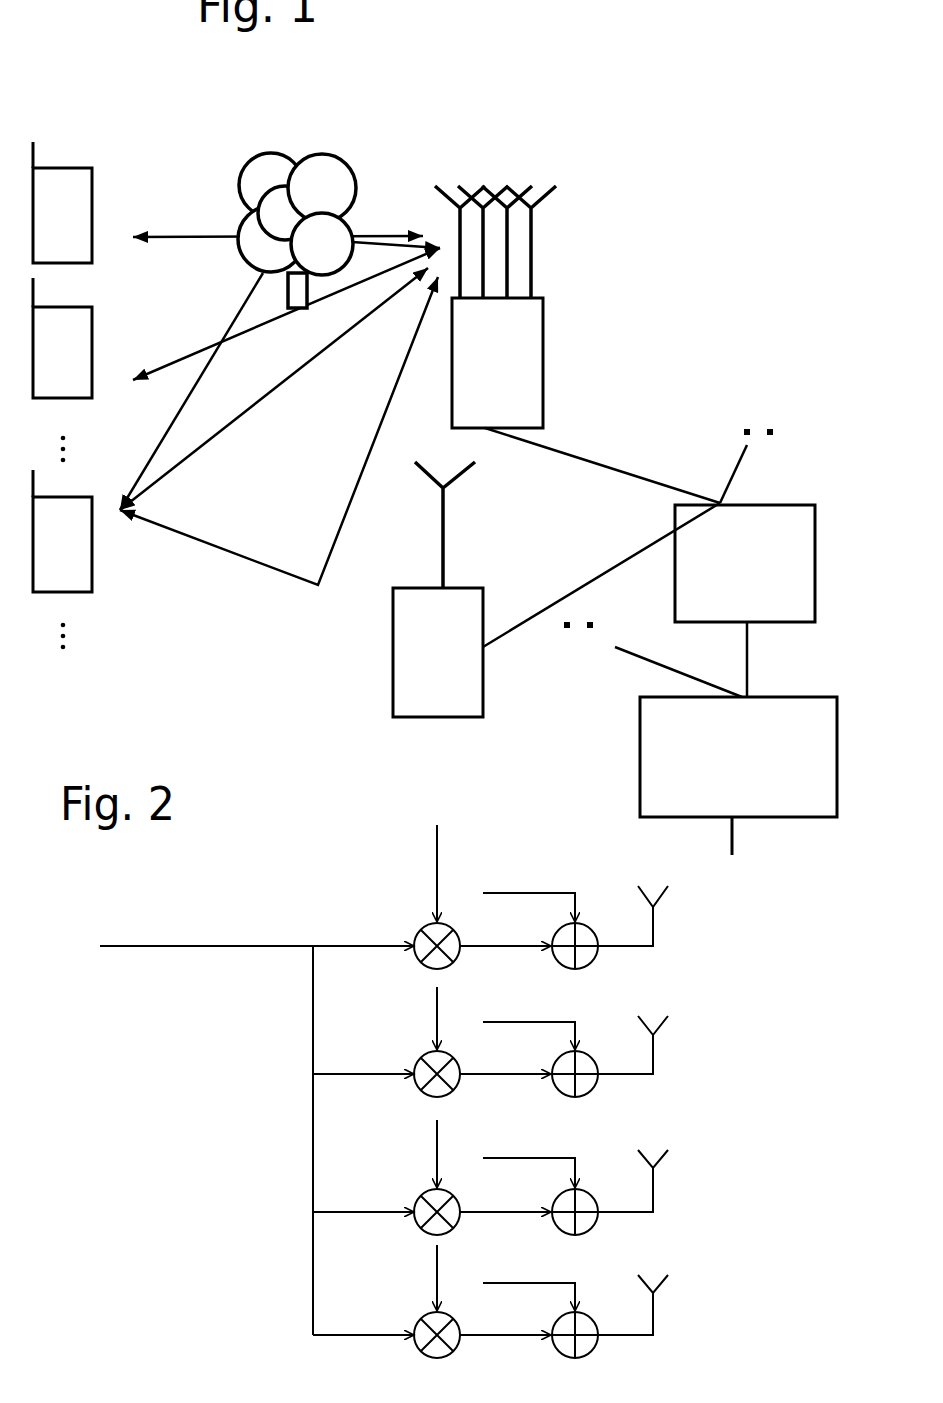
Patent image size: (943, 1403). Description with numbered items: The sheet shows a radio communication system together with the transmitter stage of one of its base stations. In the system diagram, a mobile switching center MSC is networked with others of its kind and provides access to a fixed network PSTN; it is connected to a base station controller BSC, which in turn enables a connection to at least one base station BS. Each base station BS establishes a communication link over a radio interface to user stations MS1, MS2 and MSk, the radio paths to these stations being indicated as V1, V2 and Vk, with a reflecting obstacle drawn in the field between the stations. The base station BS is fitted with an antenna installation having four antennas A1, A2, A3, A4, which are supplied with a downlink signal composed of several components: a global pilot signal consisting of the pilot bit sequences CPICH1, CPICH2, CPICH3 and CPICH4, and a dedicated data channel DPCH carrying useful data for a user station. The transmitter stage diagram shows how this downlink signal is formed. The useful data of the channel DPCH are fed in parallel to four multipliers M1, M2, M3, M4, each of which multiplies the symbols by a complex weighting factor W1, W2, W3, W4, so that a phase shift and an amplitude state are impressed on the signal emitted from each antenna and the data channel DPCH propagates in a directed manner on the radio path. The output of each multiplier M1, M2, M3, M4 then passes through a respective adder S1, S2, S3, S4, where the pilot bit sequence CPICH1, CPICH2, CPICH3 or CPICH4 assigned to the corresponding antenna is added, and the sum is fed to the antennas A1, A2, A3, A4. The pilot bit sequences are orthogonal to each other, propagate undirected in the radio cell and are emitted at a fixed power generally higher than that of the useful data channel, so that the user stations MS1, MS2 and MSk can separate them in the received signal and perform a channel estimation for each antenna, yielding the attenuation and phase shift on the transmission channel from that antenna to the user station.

In FIG. 1, the user station MS1 is at (62, 202).
In FIG. 1, the user station MS2 is at (62, 338).
In FIG. 1, the user station MSk is at (62, 531).
In FIG. 1, the propagation path V1 is at (278, 222).
In FIG. 1, the propagation path V2 is at (286, 314).
In FIG. 1, the propagation path Vk is at (279, 431).
In FIG. 1, the antenna A1 is at (437, 186).
In FIG. 2, the antenna A1 is at (656, 895).
In FIG. 1, the antenna A2 is at (483, 184).
In FIG. 2, the antenna A2 is at (656, 1024).
In FIG. 1, the antenna A3 is at (541, 184).
In FIG. 2, the antenna A3 is at (656, 1163).
In FIG. 1, the antenna A4 is at (563, 190).
In FIG. 2, the antenna A4 is at (656, 1288).
In FIG. 1, the base station BS is at (468, 507).
In FIG. 1, the base station controller BSC is at (745, 601).
In FIG. 1, the mobile switching center MSC is at (738, 757).
In FIG. 1, the fixed network PSTN is at (784, 853).
In FIG. 2, the dedicated data channel DPCH is at (235, 1121).
In FIG. 2, the complex weighting factor W1 is at (437, 843).
In FIG. 2, the complex weighting factor W2 is at (421, 1015).
In FIG. 2, the complex weighting factor W3 is at (421, 1154).
In FIG. 2, the complex weighting factor W4 is at (421, 1278).
In FIG. 2, the multiplier M1 is at (418, 932).
In FIG. 2, the multiplier M2 is at (418, 1060).
In FIG. 2, the multiplier M3 is at (418, 1198).
In FIG. 2, the multiplier M4 is at (418, 1321).
In FIG. 2, the adder S1 is at (588, 934).
In FIG. 2, the adder S2 is at (588, 1063).
In FIG. 2, the adder S3 is at (588, 1202).
In FIG. 2, the adder S4 is at (588, 1326).
In FIG. 2, the pilot bit sequence CPICH1 is at (483, 893).
In FIG. 2, the pilot bit sequence CPICH2 is at (483, 1022).
In FIG. 2, the pilot bit sequence CPICH3 is at (483, 1158).
In FIG. 2, the pilot bit sequence CPICH4 is at (483, 1283).